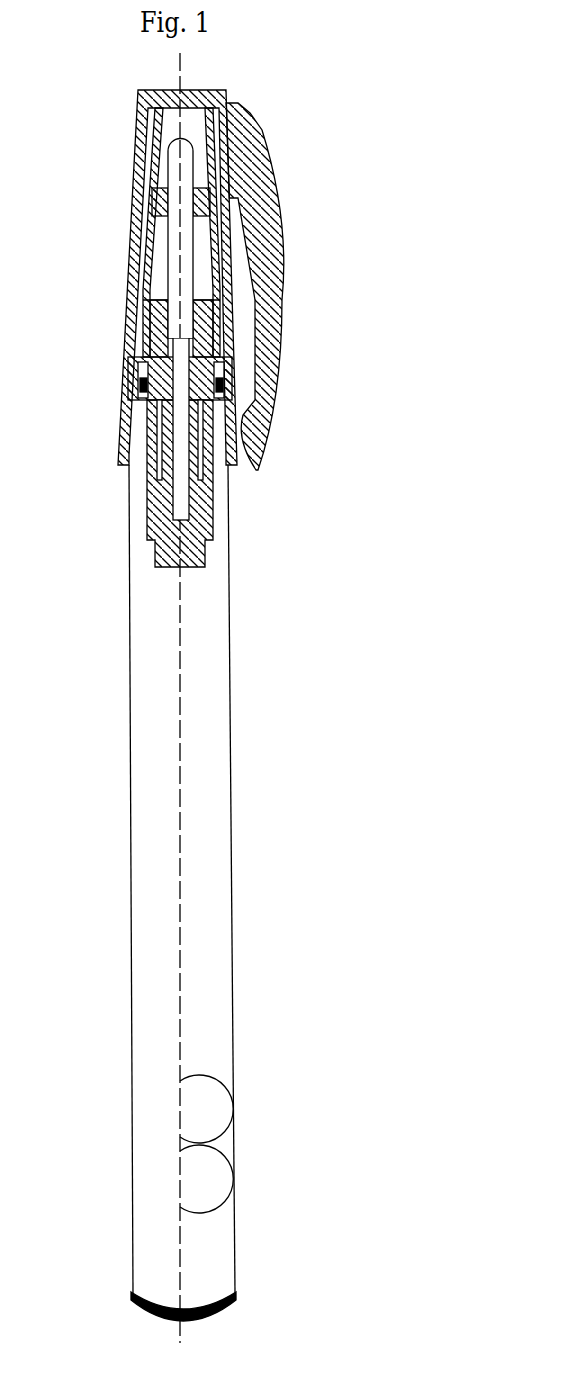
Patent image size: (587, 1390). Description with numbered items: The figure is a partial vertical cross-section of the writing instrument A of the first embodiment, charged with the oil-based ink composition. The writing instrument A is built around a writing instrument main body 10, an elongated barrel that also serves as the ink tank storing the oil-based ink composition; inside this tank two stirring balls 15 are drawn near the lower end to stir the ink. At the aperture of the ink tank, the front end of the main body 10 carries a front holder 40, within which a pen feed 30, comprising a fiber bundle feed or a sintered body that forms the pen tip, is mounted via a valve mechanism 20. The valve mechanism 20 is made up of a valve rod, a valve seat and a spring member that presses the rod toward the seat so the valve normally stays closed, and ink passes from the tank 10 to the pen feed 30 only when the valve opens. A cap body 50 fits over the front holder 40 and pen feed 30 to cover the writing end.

The writing instrument main body 10 is at (233, 718).
The stirring ball 15 is at (213, 1104).
The valve mechanism 20 is at (205, 512).
The pen feed 30 is at (178, 162).
The front holder 40 is at (128, 366).
The cap body 50 is at (258, 160).
The writing instrument A is at (303, 282).